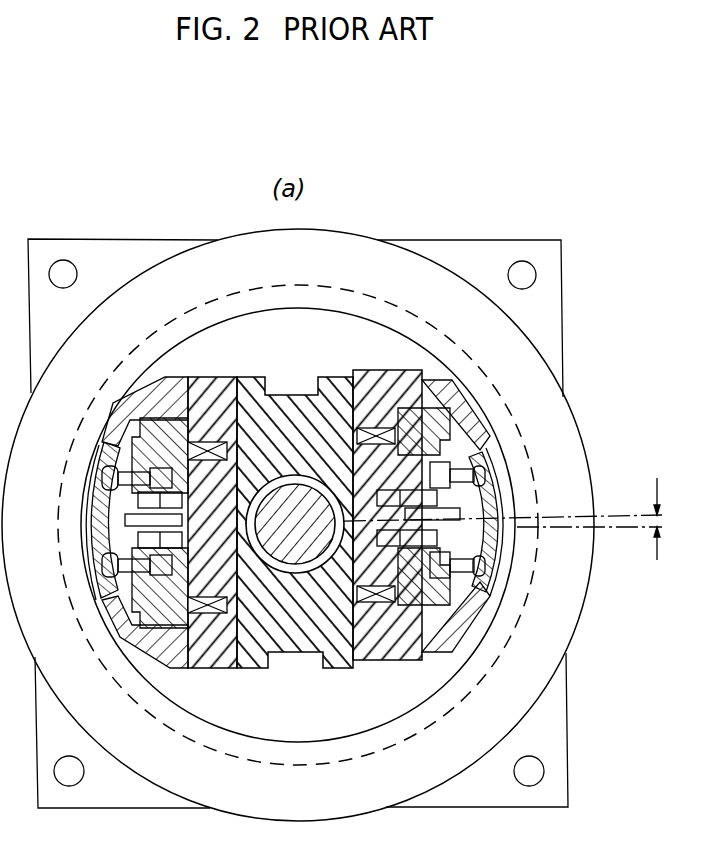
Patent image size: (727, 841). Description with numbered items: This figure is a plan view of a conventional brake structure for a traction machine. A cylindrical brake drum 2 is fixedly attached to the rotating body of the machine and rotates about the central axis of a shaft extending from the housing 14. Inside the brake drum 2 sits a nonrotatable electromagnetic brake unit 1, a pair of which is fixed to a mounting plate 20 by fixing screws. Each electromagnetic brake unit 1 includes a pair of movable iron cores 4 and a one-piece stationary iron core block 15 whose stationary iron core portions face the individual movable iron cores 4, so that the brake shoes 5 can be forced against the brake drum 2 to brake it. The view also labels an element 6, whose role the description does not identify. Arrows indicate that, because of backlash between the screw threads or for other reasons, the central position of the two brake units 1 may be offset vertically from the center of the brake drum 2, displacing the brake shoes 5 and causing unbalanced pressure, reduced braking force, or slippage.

The electromagnetic brake unit 1 is at (463, 382).
The brake drum 2 is at (217, 305).
The movable iron core 4 is at (428, 413).
The brake shoe 5 is at (505, 567).
The flexible external gear 6 is at (481, 443).
The housing 14 is at (356, 233).
The stationary iron core block 15 is at (385, 370).
The mounting plate 20 is at (333, 377).